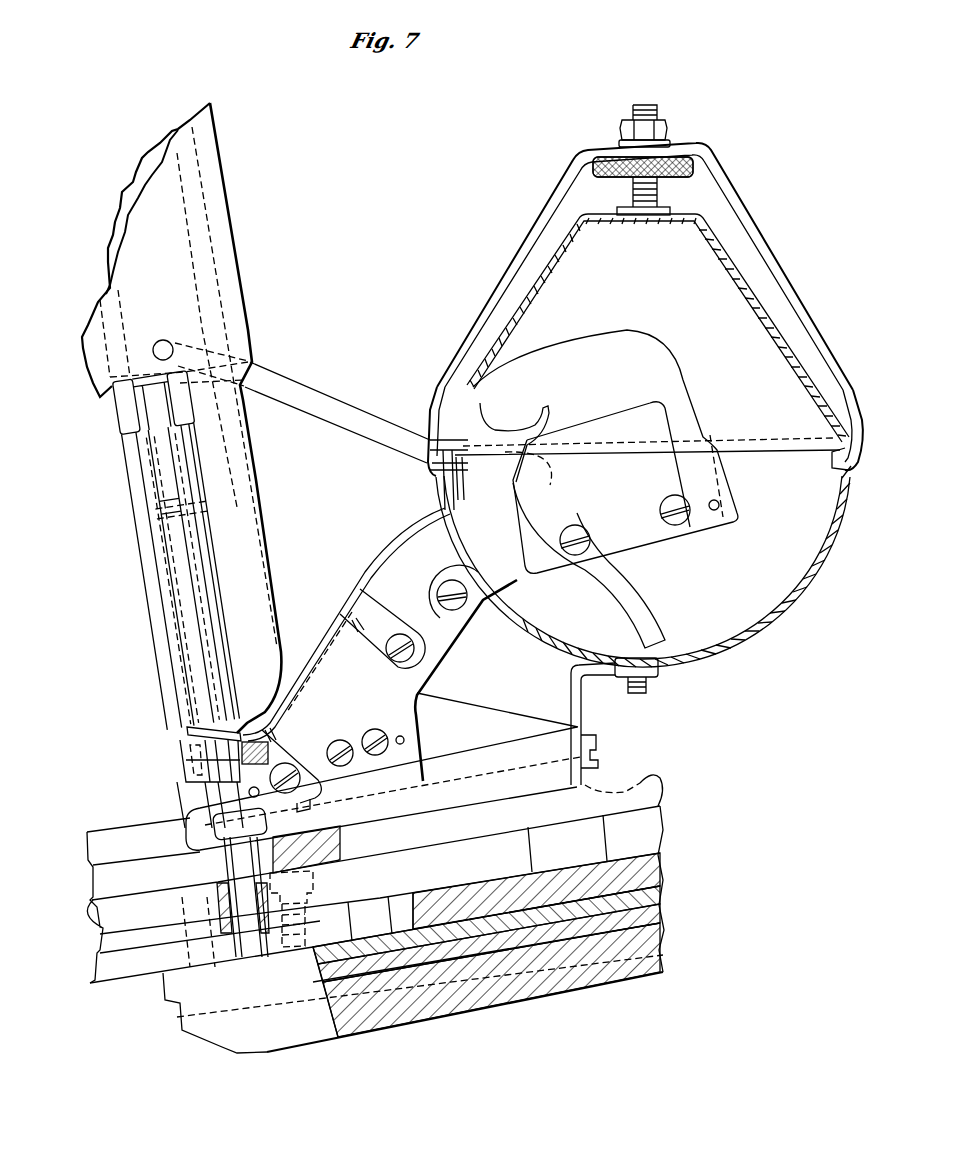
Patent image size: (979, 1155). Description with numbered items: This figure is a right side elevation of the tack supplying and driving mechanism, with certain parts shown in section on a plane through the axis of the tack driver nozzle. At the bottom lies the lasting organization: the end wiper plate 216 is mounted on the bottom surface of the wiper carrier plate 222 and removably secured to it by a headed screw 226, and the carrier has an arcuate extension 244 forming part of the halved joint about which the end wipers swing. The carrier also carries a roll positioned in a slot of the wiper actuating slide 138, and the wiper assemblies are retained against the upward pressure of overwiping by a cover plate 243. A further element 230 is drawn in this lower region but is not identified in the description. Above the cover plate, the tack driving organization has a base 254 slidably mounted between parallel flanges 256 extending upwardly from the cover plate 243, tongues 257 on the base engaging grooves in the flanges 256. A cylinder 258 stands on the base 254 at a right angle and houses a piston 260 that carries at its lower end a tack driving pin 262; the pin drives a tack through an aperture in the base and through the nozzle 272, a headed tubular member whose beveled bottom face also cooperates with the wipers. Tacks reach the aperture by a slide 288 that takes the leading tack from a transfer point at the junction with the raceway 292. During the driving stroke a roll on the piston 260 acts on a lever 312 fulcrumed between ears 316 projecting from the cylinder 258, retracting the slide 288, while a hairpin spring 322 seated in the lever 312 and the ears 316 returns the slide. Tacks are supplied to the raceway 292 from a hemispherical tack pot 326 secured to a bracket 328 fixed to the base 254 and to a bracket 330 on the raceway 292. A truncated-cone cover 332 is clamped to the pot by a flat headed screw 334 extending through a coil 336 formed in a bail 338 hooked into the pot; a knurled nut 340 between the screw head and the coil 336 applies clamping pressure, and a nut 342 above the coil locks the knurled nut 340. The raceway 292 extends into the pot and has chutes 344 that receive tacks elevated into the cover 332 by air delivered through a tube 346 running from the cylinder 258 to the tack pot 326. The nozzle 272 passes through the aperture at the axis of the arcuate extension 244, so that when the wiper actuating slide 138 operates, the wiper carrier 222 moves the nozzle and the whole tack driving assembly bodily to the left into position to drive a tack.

The wiper actuating slide 138 is at (471, 1014).
The end wiper plate 216 is at (139, 967).
The wiper carrier plate 222 is at (373, 894).
The headed screw 226 is at (346, 881).
The support block 230 is at (276, 975).
The cover plate 243 is at (633, 790).
The arcuate extension 244 is at (380, 903).
The base 254 is at (449, 706).
The parallel flanges 256 is at (568, 740).
The tongues 257 is at (305, 800).
The cylinder 258 is at (146, 605).
The piston 260 is at (110, 265).
The tack driving pin 262 is at (190, 627).
The nozzle 272 is at (223, 880).
The slide 288 is at (178, 772).
The raceway 292 is at (312, 650).
The lever 312 is at (160, 458).
The ears 316 is at (187, 366).
The hairpin spring 322 is at (175, 672).
The tack pot 326 is at (805, 578).
The bracket 328 is at (571, 700).
The bracket 330 is at (483, 610).
The cover 332 is at (743, 290).
The flat headed screw 334 is at (657, 187).
The coil 336 is at (672, 152).
The bail 338 is at (770, 243).
The knurled nut 340 is at (593, 163).
The nut 342 is at (627, 131).
The chutes 344 is at (613, 333).
The tube 346 is at (620, 600).